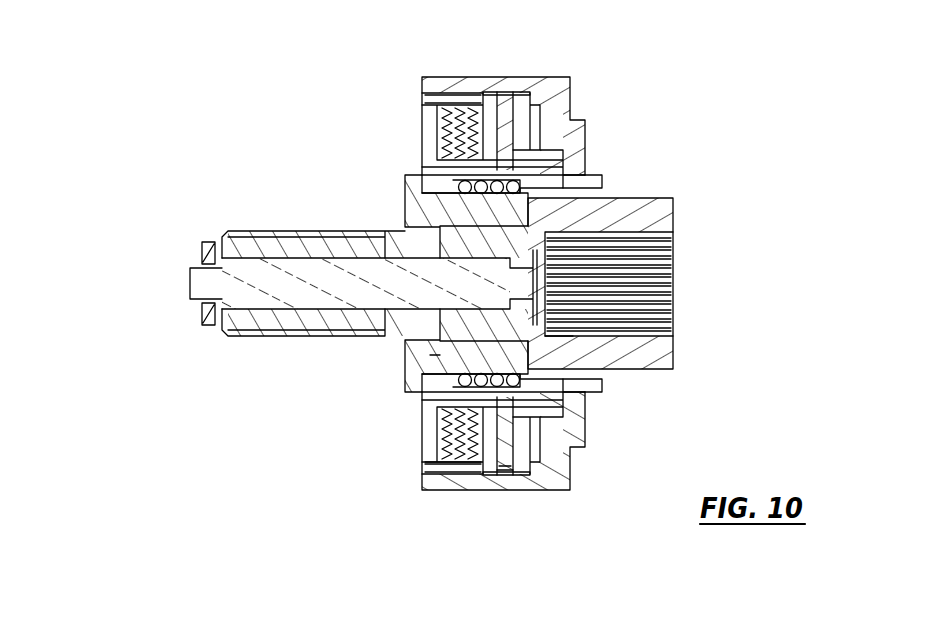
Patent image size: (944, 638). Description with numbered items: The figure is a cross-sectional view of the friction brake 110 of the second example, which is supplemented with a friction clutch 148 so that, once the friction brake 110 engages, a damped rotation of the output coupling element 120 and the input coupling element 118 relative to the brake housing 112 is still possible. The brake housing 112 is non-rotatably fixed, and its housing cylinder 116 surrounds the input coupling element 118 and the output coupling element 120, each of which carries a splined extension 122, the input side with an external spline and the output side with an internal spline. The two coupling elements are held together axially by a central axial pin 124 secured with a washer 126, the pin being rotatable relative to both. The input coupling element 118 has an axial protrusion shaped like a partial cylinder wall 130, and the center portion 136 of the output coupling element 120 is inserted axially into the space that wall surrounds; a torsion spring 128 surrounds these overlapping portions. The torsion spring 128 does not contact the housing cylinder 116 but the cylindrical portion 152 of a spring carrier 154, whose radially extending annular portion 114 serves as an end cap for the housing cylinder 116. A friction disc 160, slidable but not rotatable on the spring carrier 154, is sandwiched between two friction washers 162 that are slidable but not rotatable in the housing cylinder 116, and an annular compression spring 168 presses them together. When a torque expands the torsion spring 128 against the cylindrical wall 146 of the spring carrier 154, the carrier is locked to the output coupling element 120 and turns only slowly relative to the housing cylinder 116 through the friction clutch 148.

The friction brake 110 is at (722, 127).
The brake housing 112 is at (563, 88).
The radially extending annular portion 114 is at (437, 120).
The housing cylinder 116 is at (492, 84).
The input coupling element 118 is at (410, 330).
The output coupling element 120 is at (615, 195).
The splined extension 122 is at (365, 231).
The central axial pin 124 is at (287, 272).
The washer 126 is at (205, 248).
The torsion spring 128 is at (453, 185).
The partial cylinder wall 130 is at (435, 360).
The center portion 136 is at (575, 314).
The cylindrical wall 146 is at (605, 372).
The friction clutch 148 is at (628, 443).
The cylindrical portion 152 is at (598, 140).
The spring carrier 154 is at (432, 425).
The friction disc 160 is at (507, 470).
The friction washers 162 is at (483, 463).
The compression spring 168 is at (425, 80).